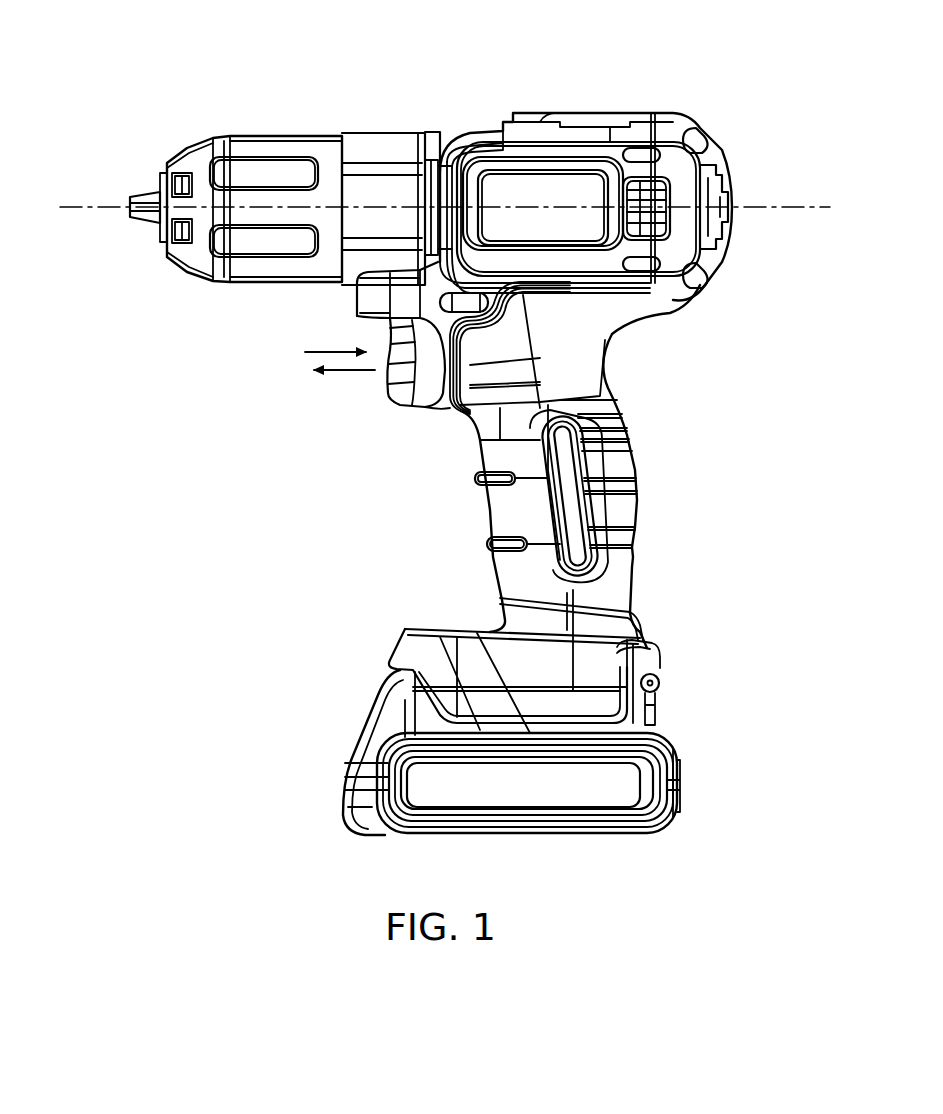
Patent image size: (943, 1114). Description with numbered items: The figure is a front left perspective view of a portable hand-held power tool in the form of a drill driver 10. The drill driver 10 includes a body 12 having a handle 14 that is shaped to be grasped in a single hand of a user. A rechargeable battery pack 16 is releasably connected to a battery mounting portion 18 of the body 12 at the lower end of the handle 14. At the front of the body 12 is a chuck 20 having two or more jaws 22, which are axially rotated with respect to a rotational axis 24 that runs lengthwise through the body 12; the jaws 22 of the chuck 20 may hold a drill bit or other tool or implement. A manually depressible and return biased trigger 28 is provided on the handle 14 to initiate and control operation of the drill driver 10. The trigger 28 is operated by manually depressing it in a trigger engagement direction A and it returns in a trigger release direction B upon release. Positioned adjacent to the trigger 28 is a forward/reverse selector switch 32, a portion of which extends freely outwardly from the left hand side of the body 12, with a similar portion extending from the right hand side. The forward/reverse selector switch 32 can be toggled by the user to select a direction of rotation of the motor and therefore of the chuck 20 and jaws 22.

The drill driver 10 is at (112, 93).
The body 12 is at (745, 170).
The handle 14 is at (613, 476).
The rechargeable battery pack 16 is at (527, 778).
The battery mounting portion 18 is at (469, 657).
The chuck 20 is at (236, 136).
The jaws 22 is at (131, 201).
The rotational axis 24 is at (790, 208).
The trigger 28 is at (400, 403).
The forward/reverse selector switch 32 is at (490, 312).